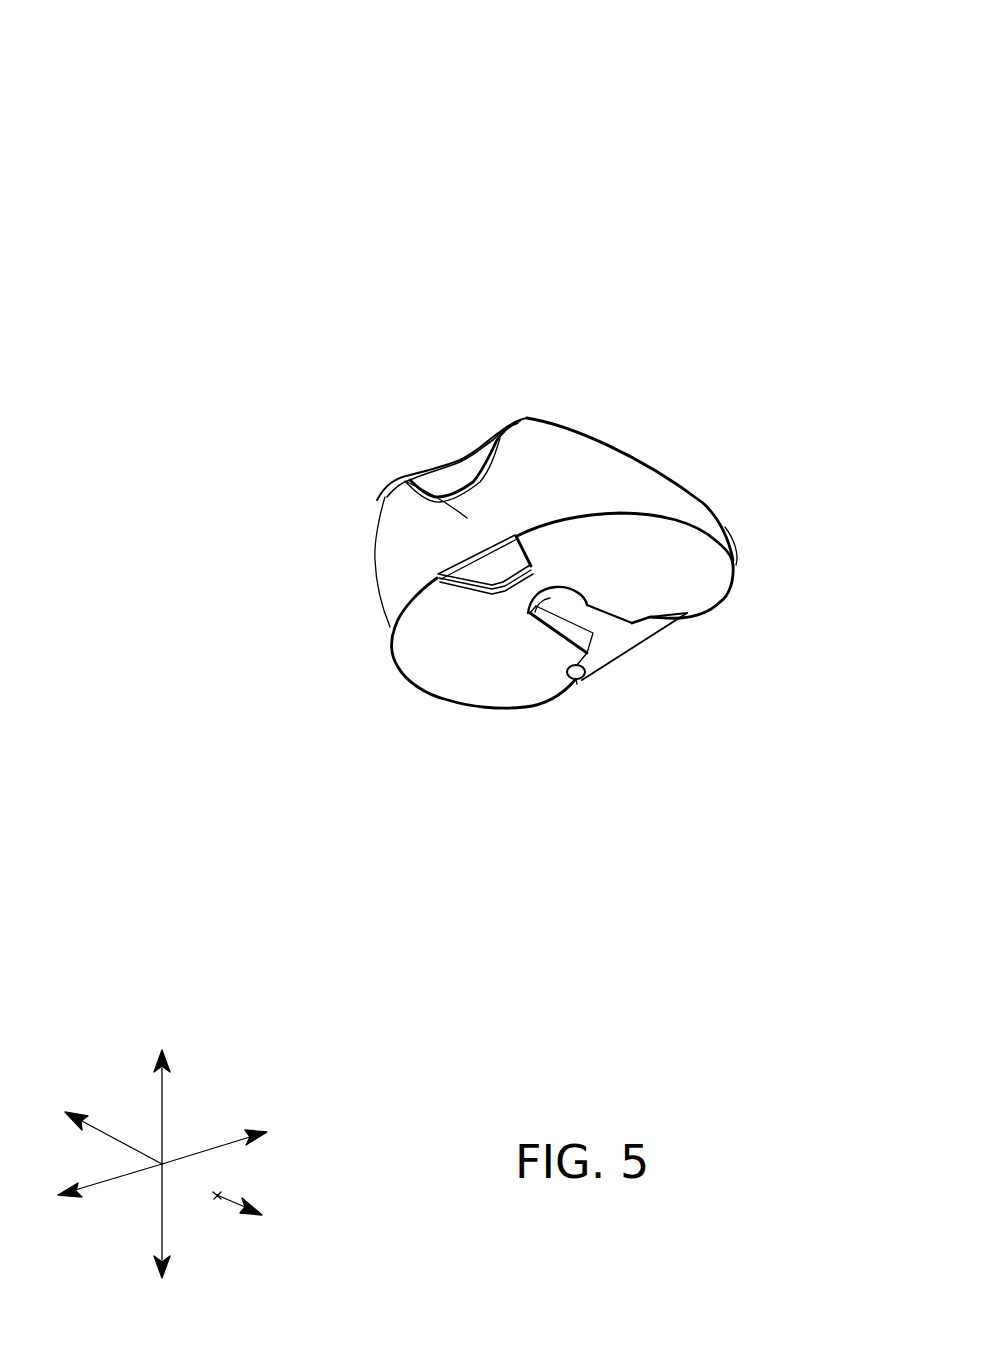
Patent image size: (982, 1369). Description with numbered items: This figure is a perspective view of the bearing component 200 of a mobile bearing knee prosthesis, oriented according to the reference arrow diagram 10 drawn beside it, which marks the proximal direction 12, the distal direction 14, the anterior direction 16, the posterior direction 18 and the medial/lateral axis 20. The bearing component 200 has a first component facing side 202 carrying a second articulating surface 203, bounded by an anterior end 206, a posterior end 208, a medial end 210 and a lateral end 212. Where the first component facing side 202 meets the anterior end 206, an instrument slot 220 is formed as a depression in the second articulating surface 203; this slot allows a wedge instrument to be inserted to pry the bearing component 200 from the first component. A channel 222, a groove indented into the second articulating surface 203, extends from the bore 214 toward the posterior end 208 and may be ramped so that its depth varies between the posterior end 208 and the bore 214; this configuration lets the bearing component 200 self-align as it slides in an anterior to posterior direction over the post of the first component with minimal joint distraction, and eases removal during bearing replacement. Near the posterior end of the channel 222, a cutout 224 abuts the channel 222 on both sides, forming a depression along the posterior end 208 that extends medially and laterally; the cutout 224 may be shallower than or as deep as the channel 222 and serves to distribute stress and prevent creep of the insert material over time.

The bearing component 200 is at (488, 226).
The first component facing side 202 is at (657, 545).
The second articulating surface 203 is at (663, 577).
The anterior end 206 is at (385, 497).
The posterior end 208 is at (640, 648).
The medial end 210 is at (693, 506).
The lateral end 212 is at (405, 676).
The bore 214 is at (537, 617).
The instrument slot 220 is at (492, 567).
The channel 222 is at (588, 615).
The cutout 224 is at (660, 618).
The reference arrow diagram 10 is at (182, 1098).
The proximal direction 12 is at (164, 1102).
The distal direction 14 is at (164, 1227).
The anterior direction 16 is at (113, 1136).
The posterior direction 18 is at (227, 1190).
The medial/lateral axis 20 is at (112, 1181).